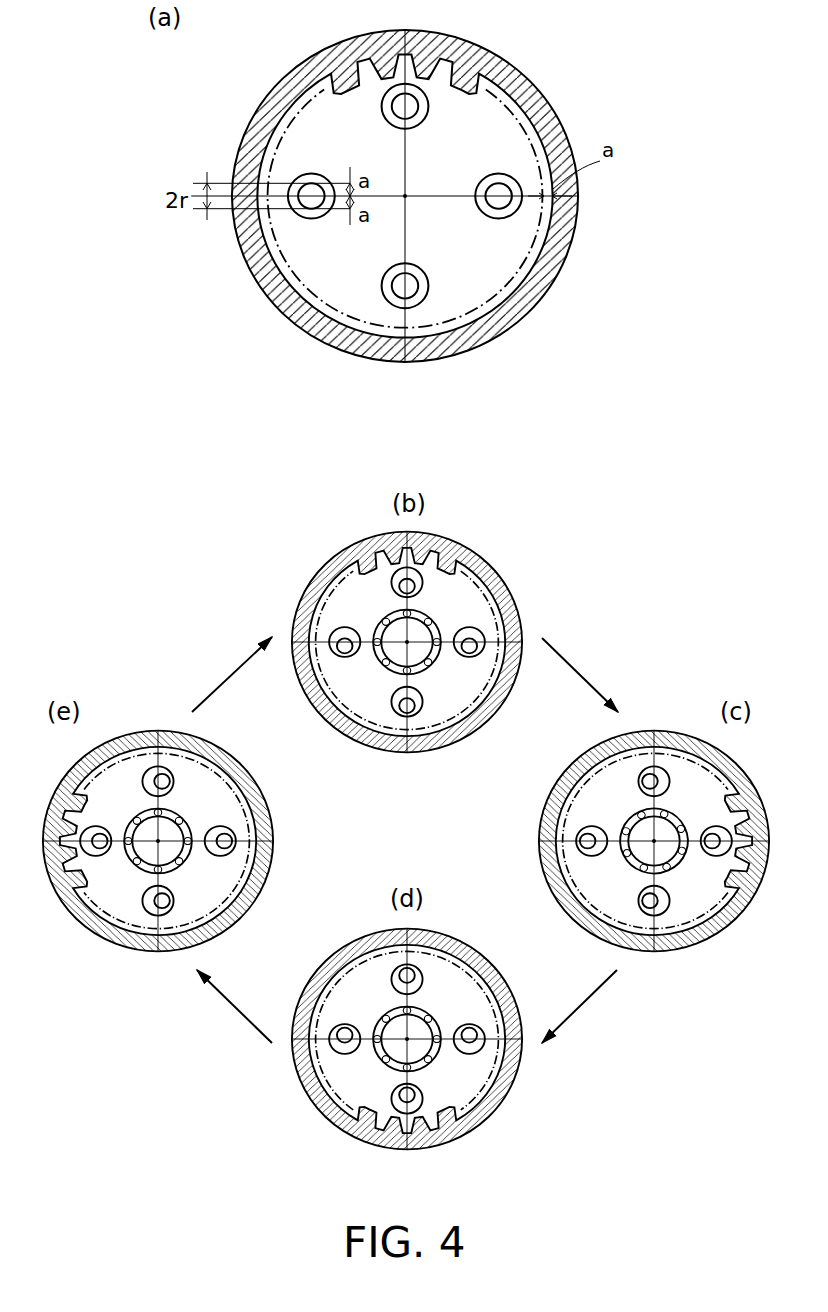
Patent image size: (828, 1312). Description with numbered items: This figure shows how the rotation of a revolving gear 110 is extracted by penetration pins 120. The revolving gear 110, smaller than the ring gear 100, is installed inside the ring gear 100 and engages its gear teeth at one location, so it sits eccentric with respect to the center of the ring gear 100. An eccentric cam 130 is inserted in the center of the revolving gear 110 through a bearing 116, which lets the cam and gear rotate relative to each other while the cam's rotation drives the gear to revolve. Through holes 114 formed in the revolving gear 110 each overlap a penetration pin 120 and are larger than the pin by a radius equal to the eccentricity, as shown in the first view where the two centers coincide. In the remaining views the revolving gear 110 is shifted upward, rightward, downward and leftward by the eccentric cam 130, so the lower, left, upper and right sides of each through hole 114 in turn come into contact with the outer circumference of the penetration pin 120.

The ring gear 100 is at (532, 100).
The revolving gear 110 is at (502, 253).
The through hole 114 is at (430, 287).
The penetration pin 120 is at (413, 296).
The eccentric cam 130 is at (388, 608).
The bearing 116 is at (374, 620).